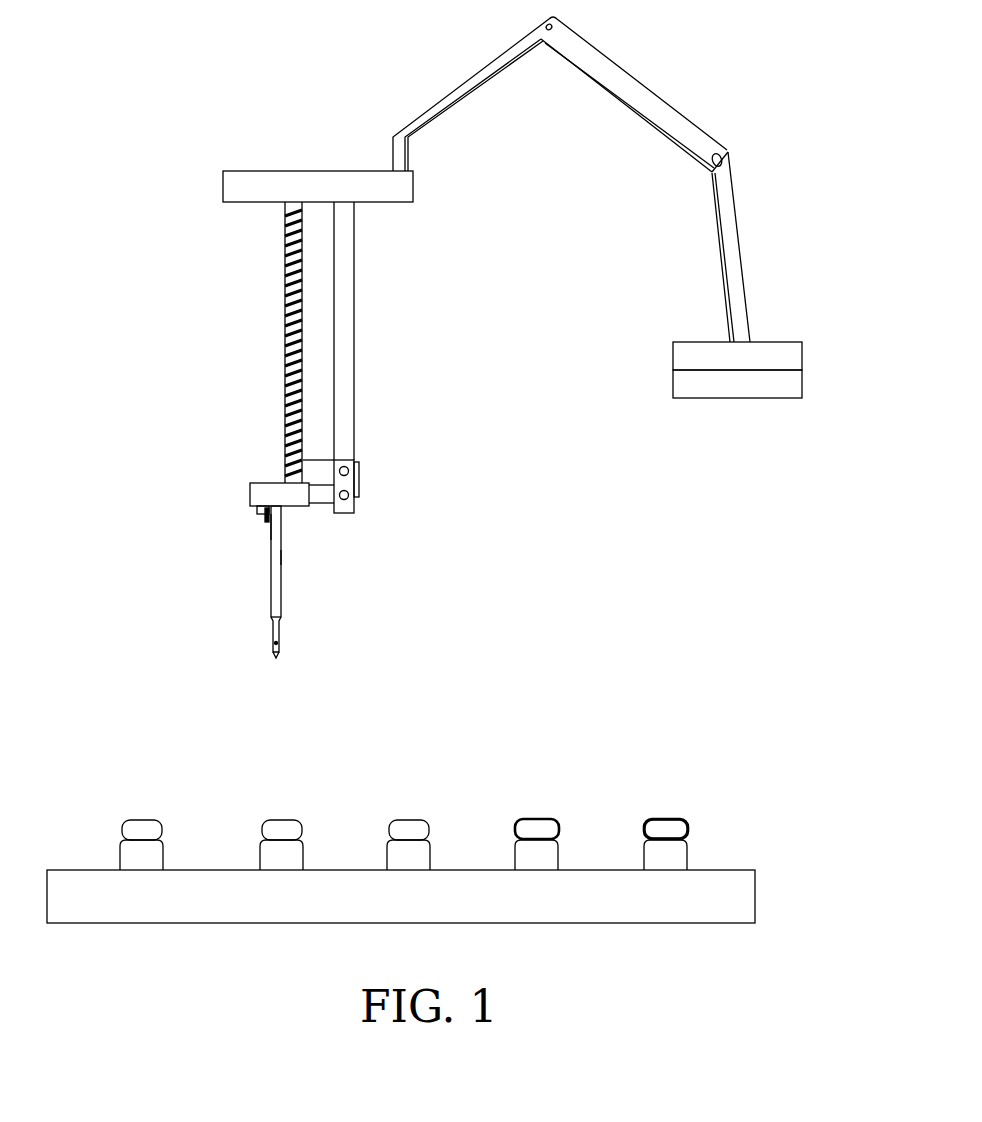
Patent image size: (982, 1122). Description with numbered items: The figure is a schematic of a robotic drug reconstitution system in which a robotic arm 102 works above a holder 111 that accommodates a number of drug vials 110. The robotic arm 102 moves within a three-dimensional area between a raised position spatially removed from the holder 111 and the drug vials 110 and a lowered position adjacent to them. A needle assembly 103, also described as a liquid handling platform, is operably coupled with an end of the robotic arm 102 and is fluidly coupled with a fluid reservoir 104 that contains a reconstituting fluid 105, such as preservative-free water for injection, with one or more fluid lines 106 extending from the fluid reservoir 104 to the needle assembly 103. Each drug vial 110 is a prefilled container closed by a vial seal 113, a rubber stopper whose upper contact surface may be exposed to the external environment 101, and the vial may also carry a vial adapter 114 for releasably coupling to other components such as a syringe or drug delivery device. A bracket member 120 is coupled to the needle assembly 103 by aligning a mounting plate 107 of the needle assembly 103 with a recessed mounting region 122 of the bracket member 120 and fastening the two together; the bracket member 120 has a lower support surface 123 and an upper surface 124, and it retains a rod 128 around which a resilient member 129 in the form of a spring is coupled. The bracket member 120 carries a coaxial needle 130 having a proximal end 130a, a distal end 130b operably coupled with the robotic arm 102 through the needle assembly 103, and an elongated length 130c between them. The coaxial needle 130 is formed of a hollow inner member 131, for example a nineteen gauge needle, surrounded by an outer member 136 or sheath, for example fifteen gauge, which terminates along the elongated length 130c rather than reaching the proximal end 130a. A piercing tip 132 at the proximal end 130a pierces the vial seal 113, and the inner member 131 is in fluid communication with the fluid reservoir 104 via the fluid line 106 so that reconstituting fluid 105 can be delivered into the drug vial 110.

The external environment 101 is at (160, 297).
The robotic arm 102 is at (740, 232).
The needle assembly 103 is at (316, 171).
The fluid reservoir 104 is at (802, 355).
The reconstituting fluid 105 is at (802, 387).
The fluid line 106 is at (612, 95).
The mounting plate 107 is at (354, 383).
The drug vial 110 is at (119, 858).
The holder 111 is at (755, 895).
The vial seal 113 is at (675, 825).
The vial adapter 114 is at (537, 818).
The bracket member 120 is at (250, 487).
The mounting region 122 is at (360, 453).
The support surface 123 is at (255, 508).
The upper surface 124 is at (260, 481).
The rod 128 is at (286, 280).
The resilient member 129 is at (286, 232).
The coaxial needle 130 is at (282, 587).
The proximal end 130a is at (258, 657).
The distal end 130b is at (267, 517).
The elongated length 130c is at (283, 557).
The inner member 131 is at (280, 628).
The piercing tip 132 is at (278, 654).
The outer member 136 is at (282, 523).